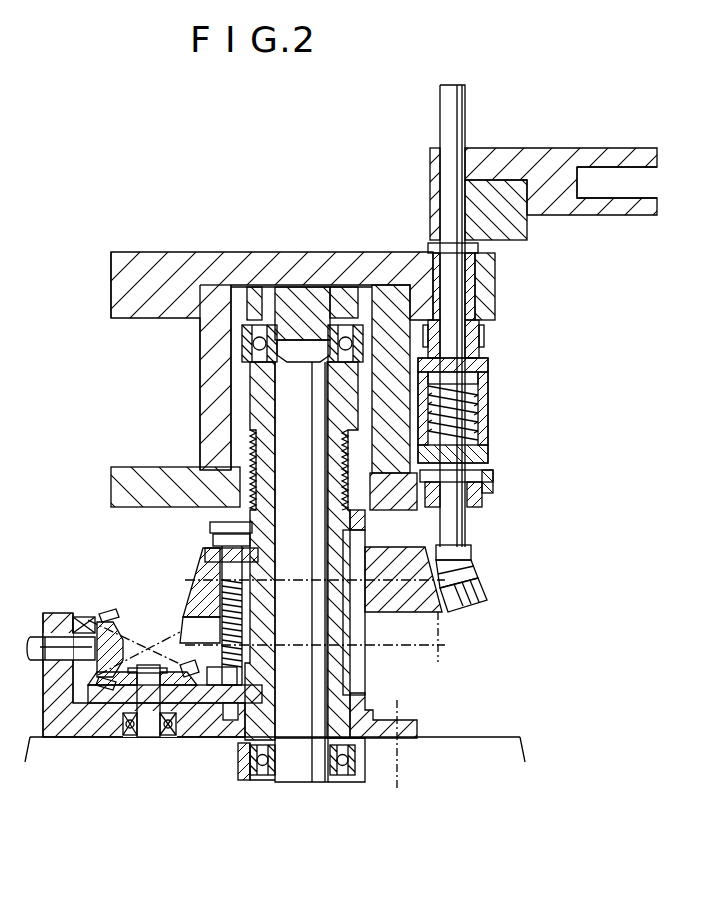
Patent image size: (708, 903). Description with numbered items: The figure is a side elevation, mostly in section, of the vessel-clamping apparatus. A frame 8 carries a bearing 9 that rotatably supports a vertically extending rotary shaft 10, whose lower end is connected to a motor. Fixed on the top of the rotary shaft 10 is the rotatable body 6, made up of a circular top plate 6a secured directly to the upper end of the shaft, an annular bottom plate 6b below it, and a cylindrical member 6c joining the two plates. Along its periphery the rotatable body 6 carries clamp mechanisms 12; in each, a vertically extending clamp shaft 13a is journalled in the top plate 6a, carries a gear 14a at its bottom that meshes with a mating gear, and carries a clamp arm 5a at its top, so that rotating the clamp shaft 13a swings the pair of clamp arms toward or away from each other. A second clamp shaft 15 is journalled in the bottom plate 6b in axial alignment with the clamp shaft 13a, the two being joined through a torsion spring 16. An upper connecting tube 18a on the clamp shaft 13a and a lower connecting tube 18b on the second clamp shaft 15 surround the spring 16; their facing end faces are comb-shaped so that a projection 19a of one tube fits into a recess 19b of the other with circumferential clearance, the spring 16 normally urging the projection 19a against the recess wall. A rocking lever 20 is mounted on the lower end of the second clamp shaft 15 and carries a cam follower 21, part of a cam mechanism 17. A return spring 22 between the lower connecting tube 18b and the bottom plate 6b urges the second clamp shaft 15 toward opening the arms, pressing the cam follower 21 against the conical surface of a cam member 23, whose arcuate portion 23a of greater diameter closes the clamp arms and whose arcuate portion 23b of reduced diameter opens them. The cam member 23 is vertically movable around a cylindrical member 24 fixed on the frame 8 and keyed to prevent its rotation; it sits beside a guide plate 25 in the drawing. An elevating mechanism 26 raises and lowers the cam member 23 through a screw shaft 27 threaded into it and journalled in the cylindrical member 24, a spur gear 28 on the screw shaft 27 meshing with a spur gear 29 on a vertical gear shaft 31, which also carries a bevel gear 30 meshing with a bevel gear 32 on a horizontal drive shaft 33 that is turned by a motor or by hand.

The clamp arm 5a is at (563, 217).
The rotatable body 6 is at (158, 243).
The circular top plate 6a is at (111, 277).
The annular bottom plate 6b is at (112, 477).
The cylindrical member 6c is at (200, 372).
The frame 8 is at (498, 737).
The bearing 9 is at (328, 340).
The rotary shaft 10 is at (312, 770).
The clamp mechanism 12 is at (491, 140).
The clamp shaft 13a is at (452, 86).
The gear 14a is at (482, 340).
The second clamp shaft 15 is at (460, 516).
The spring 16 is at (489, 438).
The cam mechanism 17 is at (453, 620).
The upper connecting tube 18a is at (486, 377).
The lower connecting tube 18b is at (489, 413).
The projection 19a is at (489, 385).
The recess 19b is at (486, 452).
The rocking lever 20 is at (473, 552).
The cam follower 21 is at (488, 588).
The return spring 22 is at (495, 482).
The cam member 23 is at (438, 650).
The arcuate portion of greater diameter 23a is at (475, 573).
The arcuate portion of reduced diameter 23b is at (196, 588).
The cylindrical member 24 is at (367, 750).
The guide plate 25 is at (360, 666).
The elevating mechanism 26 is at (133, 745).
The screw shaft 27 is at (220, 543).
The spur gear 28 is at (220, 704).
The spur gear 29 is at (193, 704).
The bevel gear 30 is at (126, 667).
The vertical gear shaft 31 is at (148, 738).
The bevel gear 32 is at (102, 628).
The horizontal drive shaft 33 is at (47, 645).